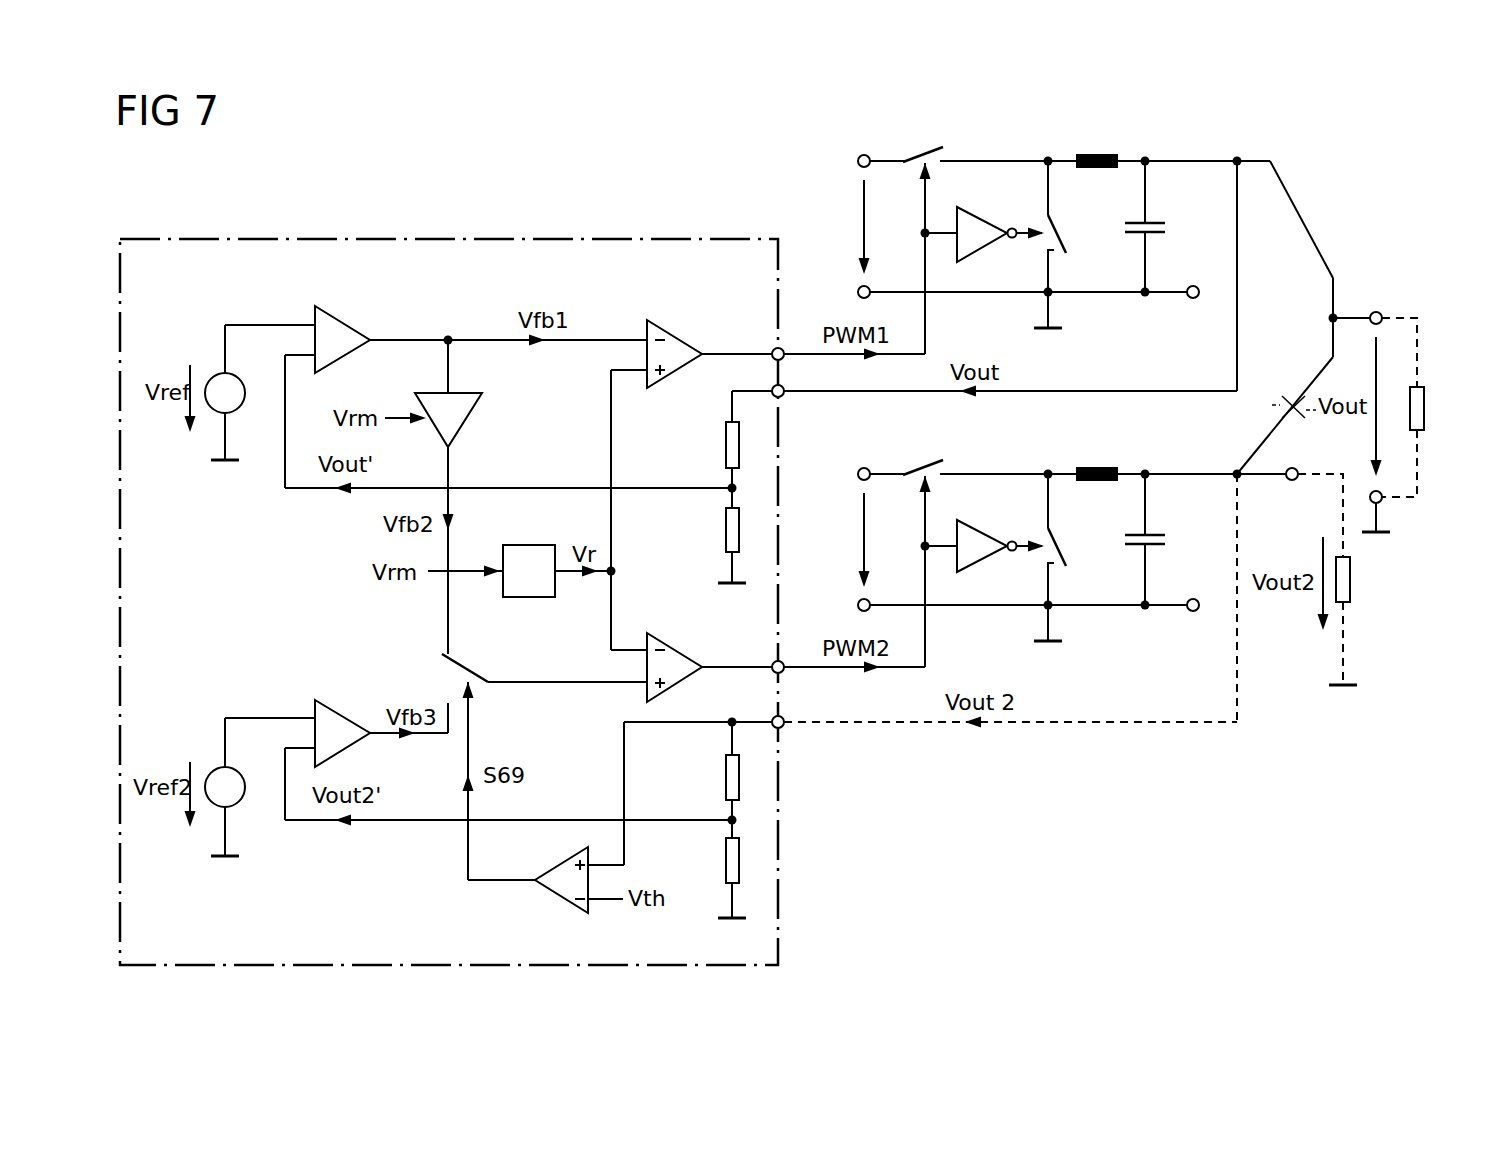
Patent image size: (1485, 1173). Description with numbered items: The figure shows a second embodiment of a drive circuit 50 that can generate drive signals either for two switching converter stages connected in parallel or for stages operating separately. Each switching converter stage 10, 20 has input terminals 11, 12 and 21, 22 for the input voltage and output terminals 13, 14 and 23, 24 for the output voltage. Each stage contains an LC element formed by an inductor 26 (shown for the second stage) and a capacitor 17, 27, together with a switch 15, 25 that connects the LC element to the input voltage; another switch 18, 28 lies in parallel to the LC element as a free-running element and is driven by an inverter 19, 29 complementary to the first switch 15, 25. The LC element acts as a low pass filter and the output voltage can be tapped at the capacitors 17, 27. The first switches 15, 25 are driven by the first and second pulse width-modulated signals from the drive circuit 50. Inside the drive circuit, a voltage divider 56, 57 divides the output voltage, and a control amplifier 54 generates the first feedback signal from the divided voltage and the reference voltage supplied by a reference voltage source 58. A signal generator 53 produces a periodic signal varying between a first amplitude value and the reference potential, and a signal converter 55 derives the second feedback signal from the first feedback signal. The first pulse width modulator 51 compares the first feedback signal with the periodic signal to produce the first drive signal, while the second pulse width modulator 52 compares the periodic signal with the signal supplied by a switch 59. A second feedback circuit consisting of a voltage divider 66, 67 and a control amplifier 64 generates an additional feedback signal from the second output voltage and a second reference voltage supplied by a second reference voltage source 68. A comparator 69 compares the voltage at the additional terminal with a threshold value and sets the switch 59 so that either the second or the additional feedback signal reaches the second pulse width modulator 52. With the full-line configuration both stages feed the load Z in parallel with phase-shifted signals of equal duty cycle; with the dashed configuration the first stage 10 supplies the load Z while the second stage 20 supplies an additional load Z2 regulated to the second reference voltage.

The first switching converter stage 10 is at (1112, 280).
The input terminal 11 is at (866, 153).
The input terminal 12 is at (872, 287).
The output terminal 13 is at (1145, 153).
The output terminal 14 is at (1145, 300).
The switch 15 is at (935, 145).
The capacitor 17 is at (1167, 229).
The switch 18 is at (1064, 237).
The inverter 19 is at (985, 217).
The second switching converter stage 20 is at (1062, 597).
The input terminal 21 is at (866, 466).
The input terminal 22 is at (872, 600).
The output terminal 23 is at (1145, 466).
The output terminal 24 is at (1145, 613).
The switch 25 is at (935, 458).
The inductor 26 is at (1097, 466).
The capacitor 27 is at (1167, 541).
The switch 28 is at (1064, 550).
The inverter 29 is at (985, 530).
The drive circuit 50 is at (430, 239).
The first pulse width modulator 51 is at (678, 336).
The second pulse width modulator 52 is at (678, 650).
The signal generator 53 is at (530, 597).
The control amplifier 54 is at (345, 327).
The signal converter 55 is at (465, 430).
The voltage divider 56 is at (726, 445).
The voltage divider 57 is at (726, 530).
The first reference voltage source 58 is at (243, 405).
The switch 59 is at (460, 660).
The control amplifier 64 is at (345, 722).
The voltage divider 66 is at (726, 777).
The voltage divider 67 is at (726, 860).
The second reference voltage source 68 is at (243, 800).
The comparator 69 is at (560, 898).
The load Z is at (1426, 411).
The additional load Z2 is at (1352, 582).